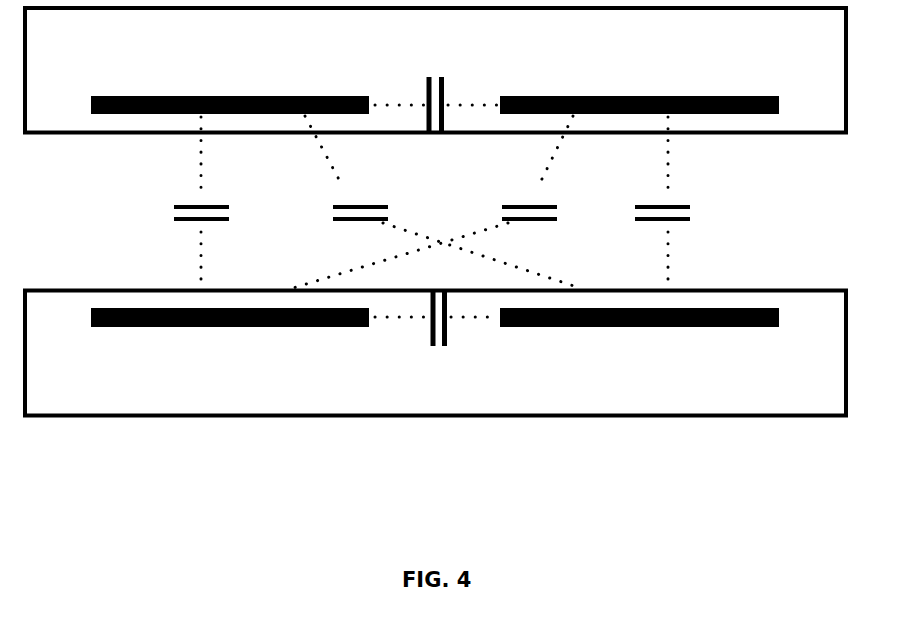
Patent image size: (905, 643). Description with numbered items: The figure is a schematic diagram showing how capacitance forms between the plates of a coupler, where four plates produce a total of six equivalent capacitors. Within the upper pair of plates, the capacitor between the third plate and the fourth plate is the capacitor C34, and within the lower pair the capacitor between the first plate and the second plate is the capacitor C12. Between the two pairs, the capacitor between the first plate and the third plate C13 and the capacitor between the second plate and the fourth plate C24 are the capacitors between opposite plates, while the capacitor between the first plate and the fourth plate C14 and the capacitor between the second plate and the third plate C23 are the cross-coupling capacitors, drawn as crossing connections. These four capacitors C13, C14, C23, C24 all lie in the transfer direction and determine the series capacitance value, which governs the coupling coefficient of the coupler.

The capacitor between the third plate and the fourth plate C34 is at (436, 86).
The capacitor between the first plate and the second plate C12 is at (436, 336).
The capacitor between the first plate and the third plate C13 is at (188, 209).
The capacitor between the second plate and the fourth plate C24 is at (652, 209).
The capacitor between the second plate and the third plate C23 is at (437, 202).
The capacitor between the first plate and the fourth plate C14 is at (433, 202).